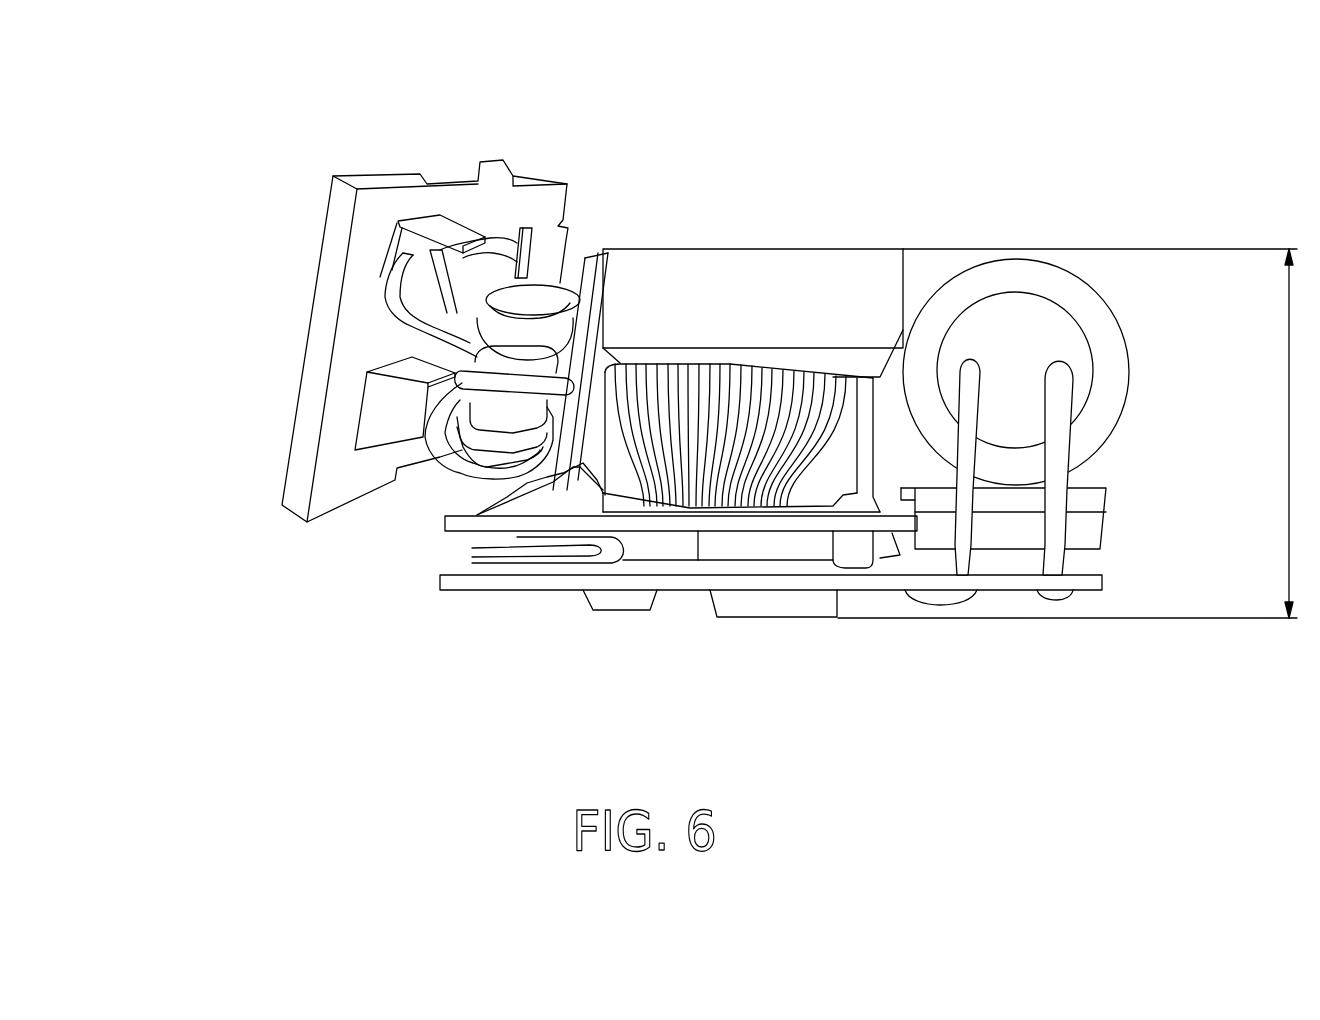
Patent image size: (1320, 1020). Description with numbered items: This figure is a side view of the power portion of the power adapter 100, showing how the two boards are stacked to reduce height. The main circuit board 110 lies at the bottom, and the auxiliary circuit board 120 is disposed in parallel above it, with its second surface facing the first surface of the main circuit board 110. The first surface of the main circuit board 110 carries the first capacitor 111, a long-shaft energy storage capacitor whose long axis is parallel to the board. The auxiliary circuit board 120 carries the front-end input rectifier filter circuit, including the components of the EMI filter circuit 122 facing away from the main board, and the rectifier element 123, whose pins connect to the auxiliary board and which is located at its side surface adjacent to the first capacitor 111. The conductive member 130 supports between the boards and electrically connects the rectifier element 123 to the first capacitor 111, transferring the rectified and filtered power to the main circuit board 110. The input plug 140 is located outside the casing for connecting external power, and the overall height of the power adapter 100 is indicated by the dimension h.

The power adapter 100 is at (138, 72).
The main circuit board 110 is at (1017, 580).
The first capacitor 111 is at (1098, 347).
The auxiliary circuit board 120 is at (676, 527).
The EMI filter circuit 122 is at (752, 303).
The rectifier element 123 is at (1075, 501).
The conductive member 130 is at (855, 548).
The input plug 140 is at (350, 343).